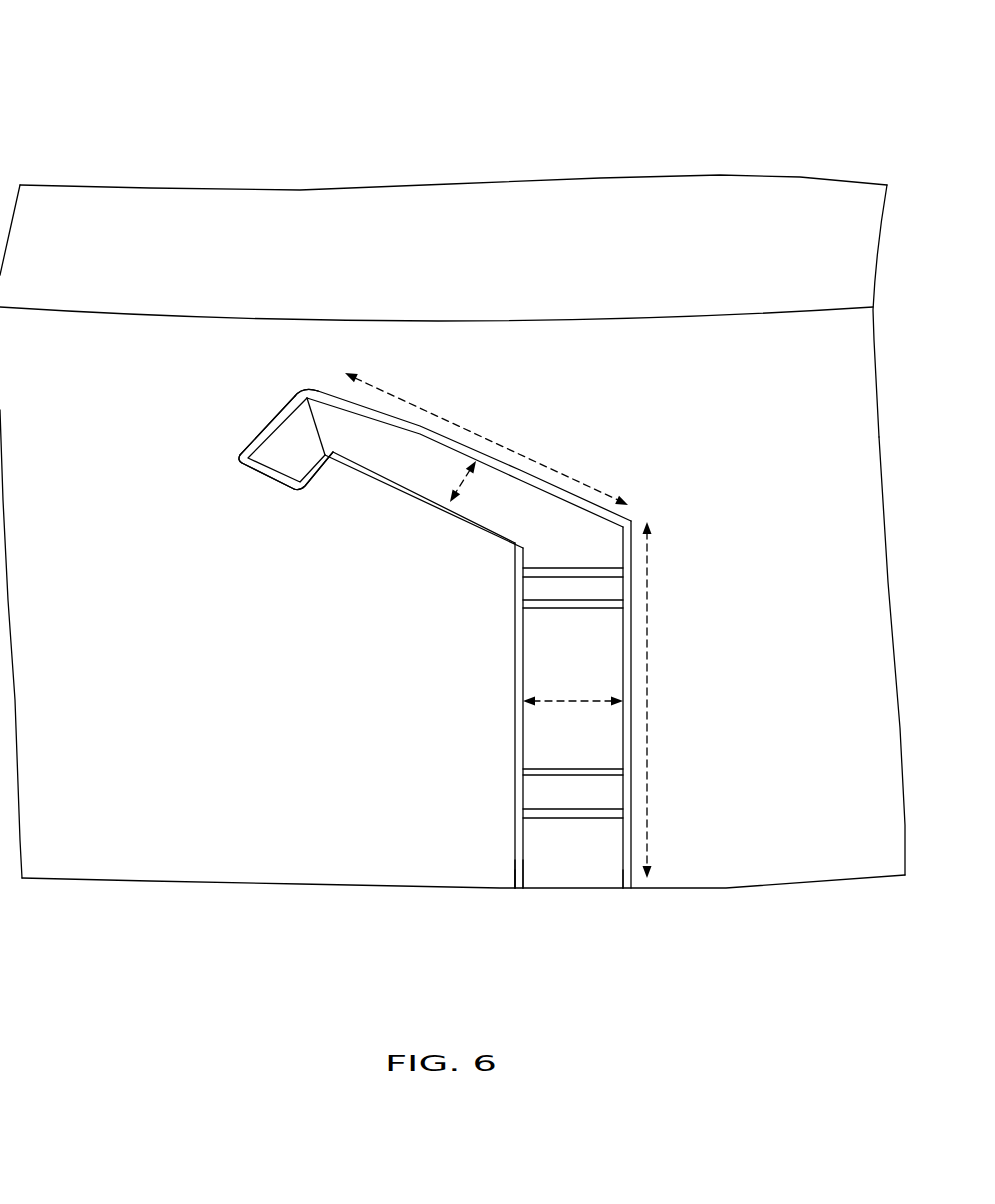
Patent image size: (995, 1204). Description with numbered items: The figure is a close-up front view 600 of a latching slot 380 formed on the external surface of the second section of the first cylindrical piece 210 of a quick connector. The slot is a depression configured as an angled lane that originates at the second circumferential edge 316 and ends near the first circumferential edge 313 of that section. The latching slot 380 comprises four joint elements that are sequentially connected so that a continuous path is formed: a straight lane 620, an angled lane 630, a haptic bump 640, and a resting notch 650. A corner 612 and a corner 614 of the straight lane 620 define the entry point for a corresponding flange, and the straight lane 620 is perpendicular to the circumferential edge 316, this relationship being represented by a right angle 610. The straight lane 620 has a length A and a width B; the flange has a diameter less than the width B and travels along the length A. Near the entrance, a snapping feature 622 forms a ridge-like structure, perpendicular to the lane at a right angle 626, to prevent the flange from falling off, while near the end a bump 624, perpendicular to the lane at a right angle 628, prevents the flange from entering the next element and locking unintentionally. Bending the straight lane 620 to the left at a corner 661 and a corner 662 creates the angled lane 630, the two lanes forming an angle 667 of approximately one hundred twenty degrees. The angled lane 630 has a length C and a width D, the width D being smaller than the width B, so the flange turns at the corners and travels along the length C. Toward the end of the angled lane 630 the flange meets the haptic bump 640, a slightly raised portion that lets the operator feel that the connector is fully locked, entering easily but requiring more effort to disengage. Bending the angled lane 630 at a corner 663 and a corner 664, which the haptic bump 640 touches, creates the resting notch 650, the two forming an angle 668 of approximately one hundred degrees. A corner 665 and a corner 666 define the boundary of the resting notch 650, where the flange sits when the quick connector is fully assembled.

The close-up front view 600 is at (112, 77).
The first cylindrical piece 210 is at (358, 922).
The first circumferential edge 313 is at (607, 321).
The second circumferential edge 316 is at (726, 888).
The latching slot 380 is at (742, 426).
The right angle 610 is at (513, 852).
The corner 612 is at (518, 888).
The corner 614 is at (625, 888).
The straight lane 620 is at (528, 737).
The snapping feature 622 is at (528, 792).
The bump 624 is at (533, 590).
The right angle 626 is at (609, 842).
The right angle 628 is at (603, 614).
The angled lane 630 is at (520, 500).
The haptic bump 640 is at (322, 420).
The resting notch 650 is at (282, 442).
The corner 661 is at (633, 521).
The corner 662 is at (522, 545).
The corner 663 is at (303, 388).
The corner 664 is at (320, 446).
The corner 665 is at (240, 458).
The corner 666 is at (298, 490).
The angle 667 is at (513, 573).
The angle 668 is at (362, 480).
The length A is at (655, 700).
The width B is at (573, 687).
The length C is at (486, 439).
The width D is at (457, 478).